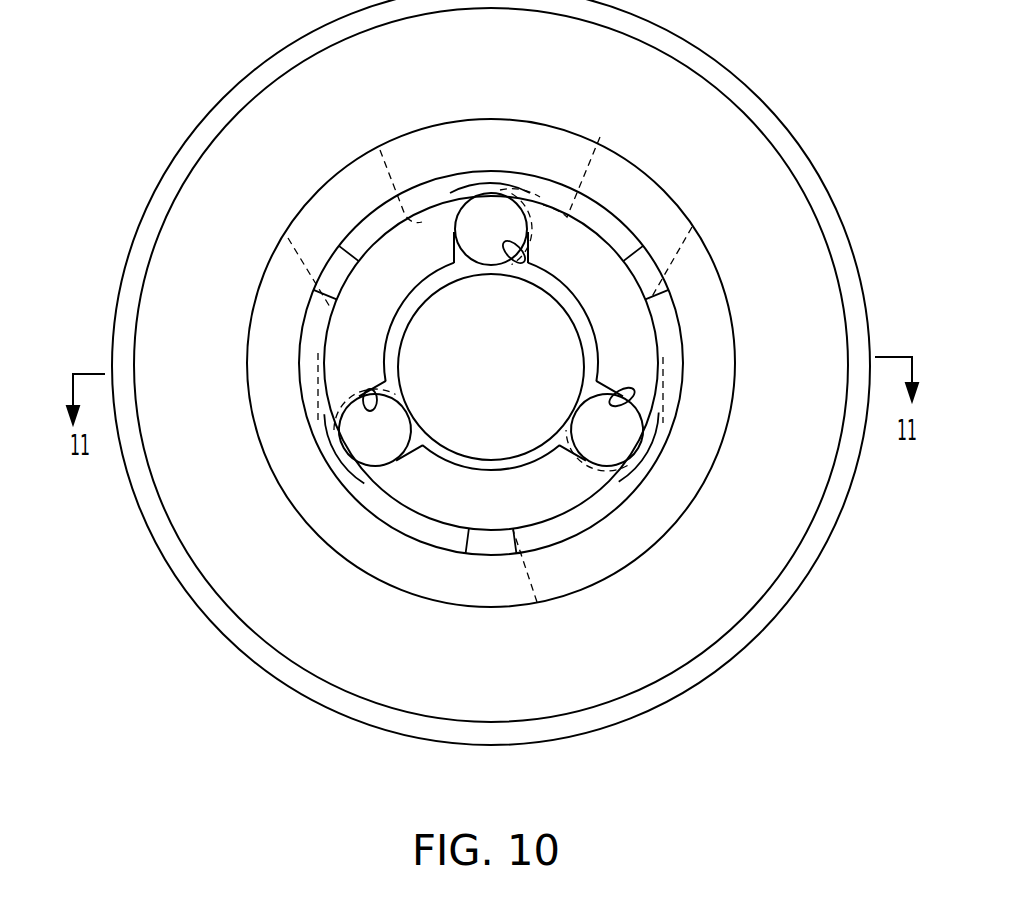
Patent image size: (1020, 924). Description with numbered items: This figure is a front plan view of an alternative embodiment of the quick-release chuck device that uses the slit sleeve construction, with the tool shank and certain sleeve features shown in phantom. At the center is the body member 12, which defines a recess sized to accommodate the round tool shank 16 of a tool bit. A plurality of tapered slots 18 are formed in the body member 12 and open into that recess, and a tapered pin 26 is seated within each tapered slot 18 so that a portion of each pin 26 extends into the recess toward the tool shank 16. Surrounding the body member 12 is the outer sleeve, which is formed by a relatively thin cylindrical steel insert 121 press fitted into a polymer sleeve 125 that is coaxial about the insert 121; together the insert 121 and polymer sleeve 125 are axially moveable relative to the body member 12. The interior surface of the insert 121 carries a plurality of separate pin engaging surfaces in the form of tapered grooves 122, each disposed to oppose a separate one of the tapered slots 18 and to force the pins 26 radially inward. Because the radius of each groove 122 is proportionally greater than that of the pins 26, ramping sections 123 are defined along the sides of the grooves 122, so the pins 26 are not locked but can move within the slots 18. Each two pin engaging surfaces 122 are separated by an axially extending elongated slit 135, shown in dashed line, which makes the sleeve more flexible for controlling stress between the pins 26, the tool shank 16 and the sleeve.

The body member 12 is at (632, 348).
The tool shank 16 is at (557, 293).
The tapered slots 18 is at (667, 372).
The tapered pin 26 is at (523, 193).
The cylindrical steel insert 121 is at (440, 538).
The radiused grooves 122 is at (447, 195).
The ramping sections 123 is at (380, 150).
The polymer sleeve 125 is at (318, 515).
The elongated slit 135 is at (288, 238).